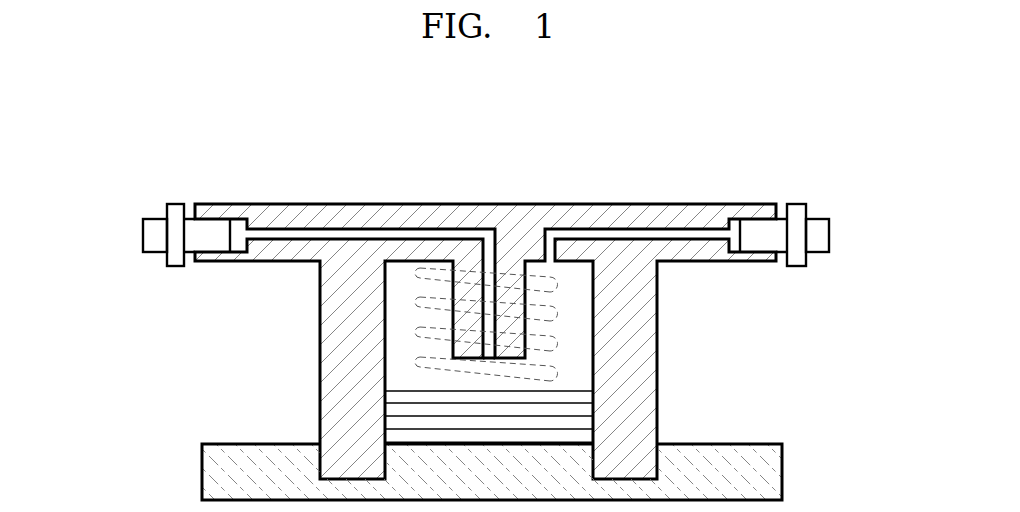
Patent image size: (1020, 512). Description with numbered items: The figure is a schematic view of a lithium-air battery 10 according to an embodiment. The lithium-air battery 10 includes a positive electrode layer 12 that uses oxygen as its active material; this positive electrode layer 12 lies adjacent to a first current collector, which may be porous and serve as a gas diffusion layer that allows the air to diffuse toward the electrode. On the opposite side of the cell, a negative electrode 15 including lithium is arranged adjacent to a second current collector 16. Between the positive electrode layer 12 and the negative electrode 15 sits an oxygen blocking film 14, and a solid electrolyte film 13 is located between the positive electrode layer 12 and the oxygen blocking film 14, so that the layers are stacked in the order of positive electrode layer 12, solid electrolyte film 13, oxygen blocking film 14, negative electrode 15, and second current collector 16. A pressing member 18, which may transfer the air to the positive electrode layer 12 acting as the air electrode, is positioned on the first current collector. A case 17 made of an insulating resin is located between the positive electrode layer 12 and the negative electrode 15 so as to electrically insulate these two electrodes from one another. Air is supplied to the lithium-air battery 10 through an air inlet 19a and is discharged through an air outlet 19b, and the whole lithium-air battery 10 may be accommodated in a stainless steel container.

The lithium-air battery 10 is at (758, 150).
The positive electrode layer 12 is at (577, 393).
The solid electrolyte film 13 is at (580, 407).
The oxygen blocking film 14 is at (582, 423).
The negative electrode 15 is at (583, 435).
The second current collector 16 is at (775, 473).
The case 17 is at (327, 313).
The pressing member 18 is at (557, 319).
The air inlet 19a is at (119, 234).
The air outlet 19b is at (842, 233).